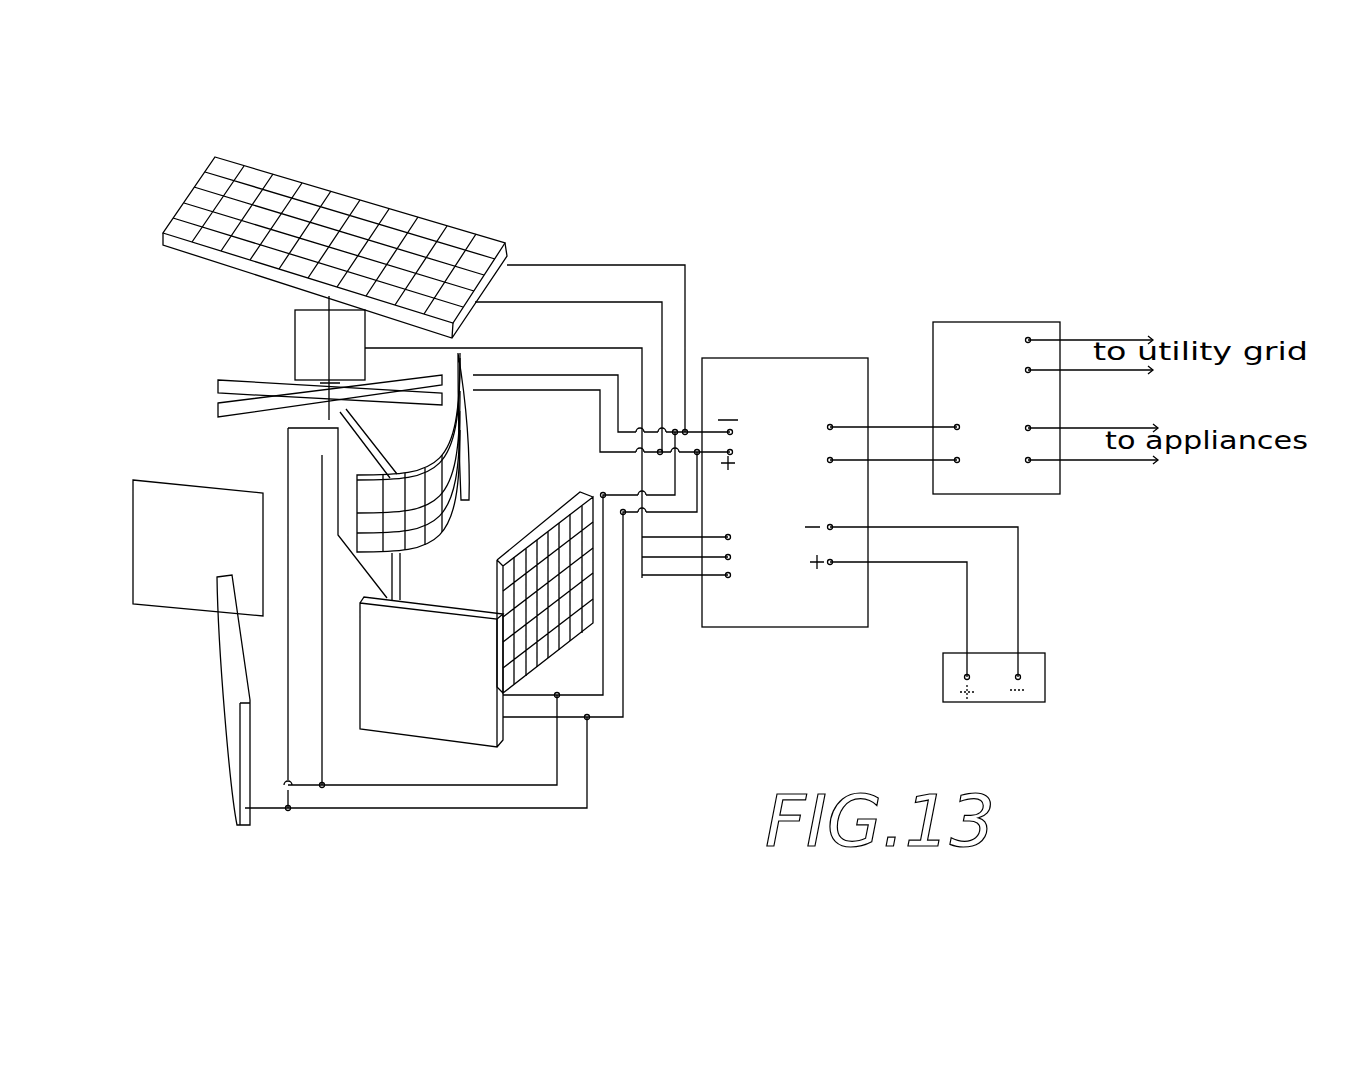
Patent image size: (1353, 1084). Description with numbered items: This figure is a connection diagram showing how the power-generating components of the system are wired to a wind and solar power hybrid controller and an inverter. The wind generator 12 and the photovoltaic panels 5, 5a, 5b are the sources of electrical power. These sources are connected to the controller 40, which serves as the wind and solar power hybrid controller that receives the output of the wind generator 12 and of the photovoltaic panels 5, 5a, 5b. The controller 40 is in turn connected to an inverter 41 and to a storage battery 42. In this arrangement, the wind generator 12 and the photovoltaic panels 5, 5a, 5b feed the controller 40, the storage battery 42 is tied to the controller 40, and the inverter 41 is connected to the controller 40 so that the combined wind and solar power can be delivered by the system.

The photovoltaic panel 5 is at (460, 236).
The photovoltaic panel 5a is at (467, 472).
The photovoltaic panel 5b is at (363, 440).
The wind generator 12 is at (313, 337).
The controller 40 is at (757, 382).
The inverter 41 is at (992, 335).
The storage battery 42 is at (1033, 665).